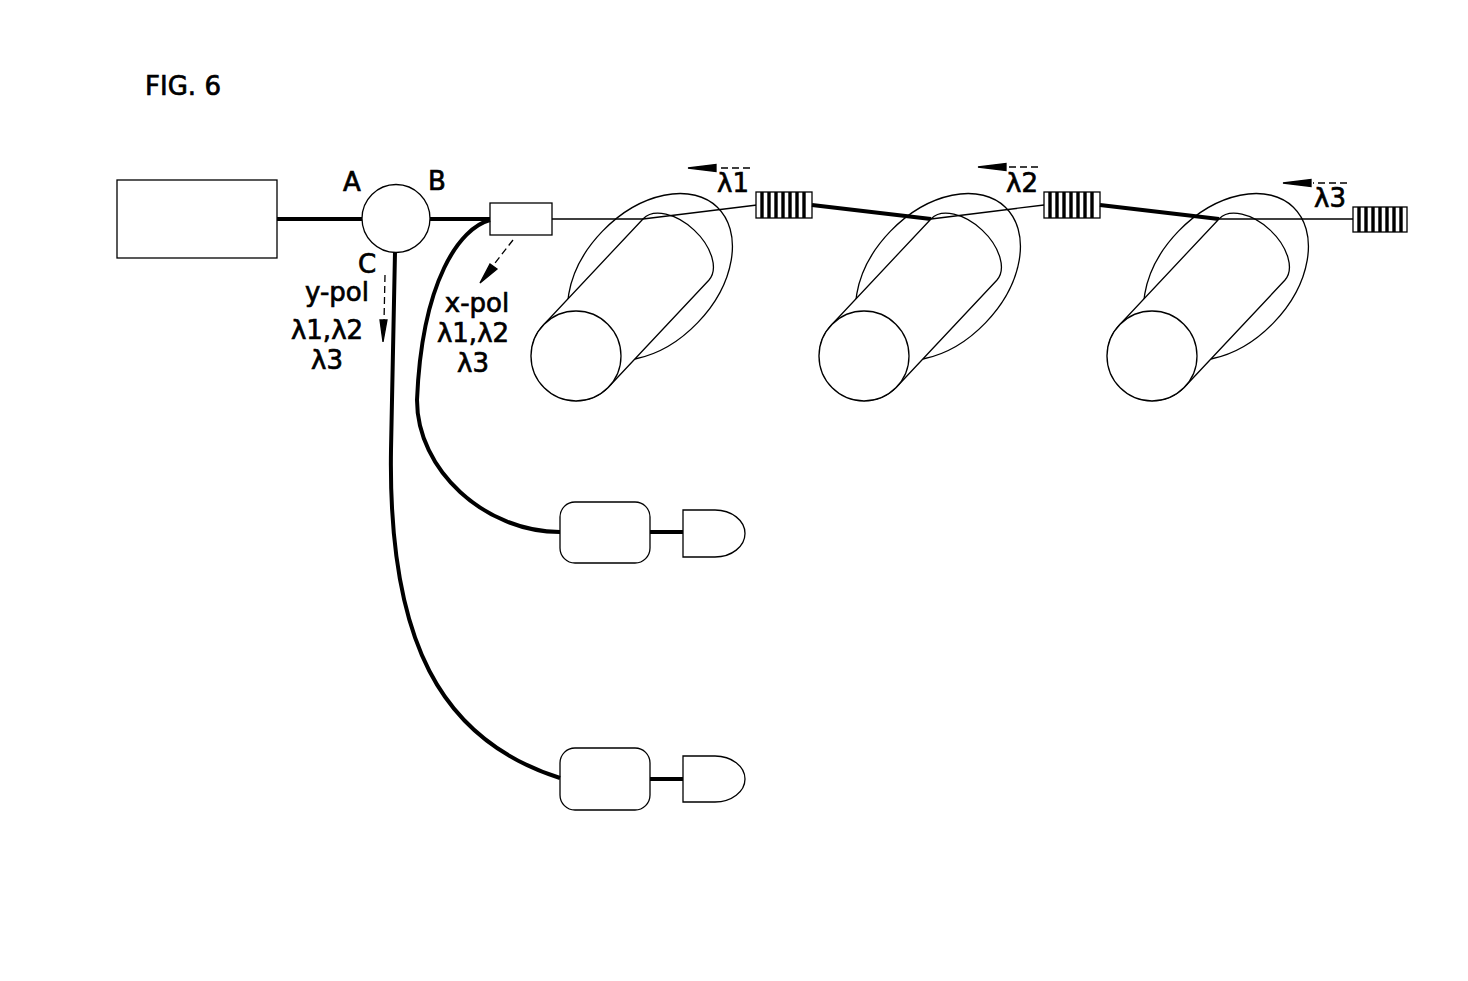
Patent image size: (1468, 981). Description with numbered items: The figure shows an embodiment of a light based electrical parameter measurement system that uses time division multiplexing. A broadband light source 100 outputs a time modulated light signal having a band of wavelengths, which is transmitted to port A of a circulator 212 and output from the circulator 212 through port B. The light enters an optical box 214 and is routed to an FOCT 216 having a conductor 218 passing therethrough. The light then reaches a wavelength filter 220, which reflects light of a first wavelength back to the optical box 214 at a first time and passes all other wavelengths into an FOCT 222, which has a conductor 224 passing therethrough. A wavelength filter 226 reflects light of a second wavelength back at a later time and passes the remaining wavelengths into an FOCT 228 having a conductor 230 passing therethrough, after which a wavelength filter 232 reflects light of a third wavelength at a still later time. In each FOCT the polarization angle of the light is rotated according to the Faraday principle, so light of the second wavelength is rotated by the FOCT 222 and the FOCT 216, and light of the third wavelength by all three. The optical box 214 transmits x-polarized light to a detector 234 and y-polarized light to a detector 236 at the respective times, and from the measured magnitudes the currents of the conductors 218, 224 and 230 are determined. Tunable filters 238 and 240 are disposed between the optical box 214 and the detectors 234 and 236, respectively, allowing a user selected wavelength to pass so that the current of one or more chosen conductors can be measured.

The broadband light source 100 is at (172, 232).
The circulator 212 is at (374, 232).
The optical box 214 is at (499, 232).
The FOCT 216 is at (686, 372).
The conductor 218 is at (615, 298).
The wavelength filter 220 is at (765, 191).
The FOCT 222 is at (974, 372).
The conductor 224 is at (903, 298).
The wavelength filter 226 is at (1053, 191).
The FOCT 228 is at (1263, 377).
The conductor 230 is at (1191, 298).
The wavelength filter 232 is at (1363, 207).
The detector 234 is at (733, 546).
The detector 236 is at (733, 794).
The tunable filter 238 is at (583, 547).
The tunable filter 240 is at (583, 794).